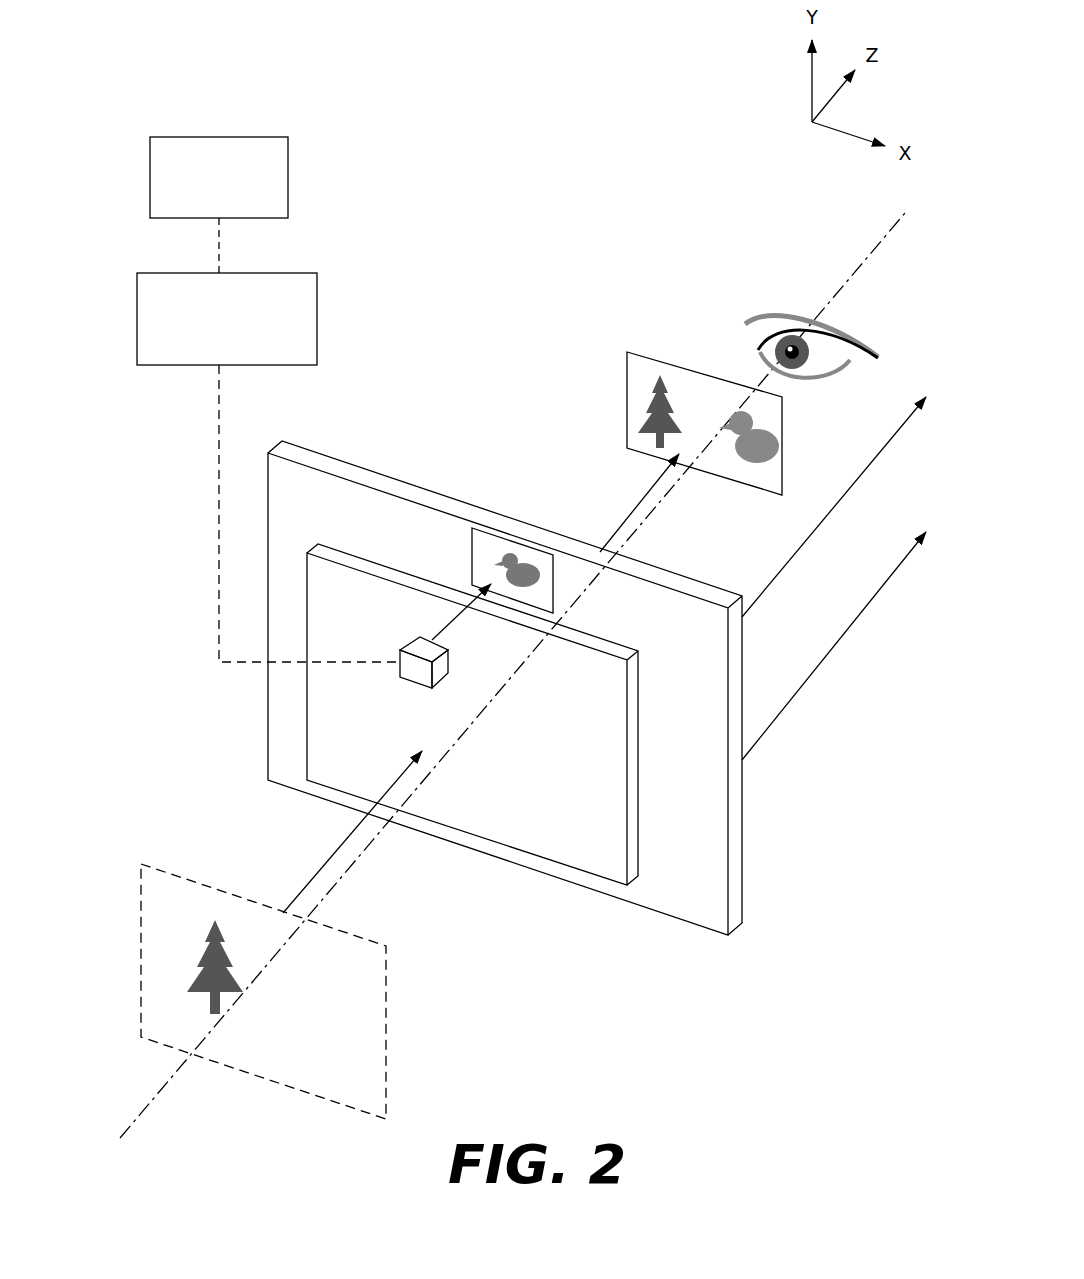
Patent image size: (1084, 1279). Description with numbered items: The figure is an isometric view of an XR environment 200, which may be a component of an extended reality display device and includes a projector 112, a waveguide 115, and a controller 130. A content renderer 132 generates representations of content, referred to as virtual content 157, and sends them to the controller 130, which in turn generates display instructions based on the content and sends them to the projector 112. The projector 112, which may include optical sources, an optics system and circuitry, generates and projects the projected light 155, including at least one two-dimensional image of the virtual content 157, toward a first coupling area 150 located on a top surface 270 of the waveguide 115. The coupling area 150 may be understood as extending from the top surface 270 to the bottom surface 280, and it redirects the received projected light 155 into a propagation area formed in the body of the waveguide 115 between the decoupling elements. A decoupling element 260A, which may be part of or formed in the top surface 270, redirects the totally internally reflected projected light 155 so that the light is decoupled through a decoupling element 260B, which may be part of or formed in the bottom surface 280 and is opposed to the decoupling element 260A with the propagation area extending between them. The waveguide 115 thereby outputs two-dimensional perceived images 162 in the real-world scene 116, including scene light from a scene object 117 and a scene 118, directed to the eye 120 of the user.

The XR environment 200 is at (301, 35).
The content renderer 132 is at (214, 137).
The controller 130 is at (198, 273).
The waveguide 115 is at (615, 732).
The top surface 270 is at (708, 910).
The bottom surface 280 is at (743, 788).
The decoupling element 260A is at (520, 822).
The decoupling element 260B is at (717, 837).
The first coupling area 150 is at (471, 531).
The virtual content 157 is at (485, 553).
The projected light 155 is at (458, 618).
The projector 112 is at (400, 669).
The real-world scene 116 is at (360, 670).
The scene 118 is at (386, 972).
The scene object 117 is at (246, 980).
The perceived image 162 is at (675, 366).
The eye 120 is at (790, 330).